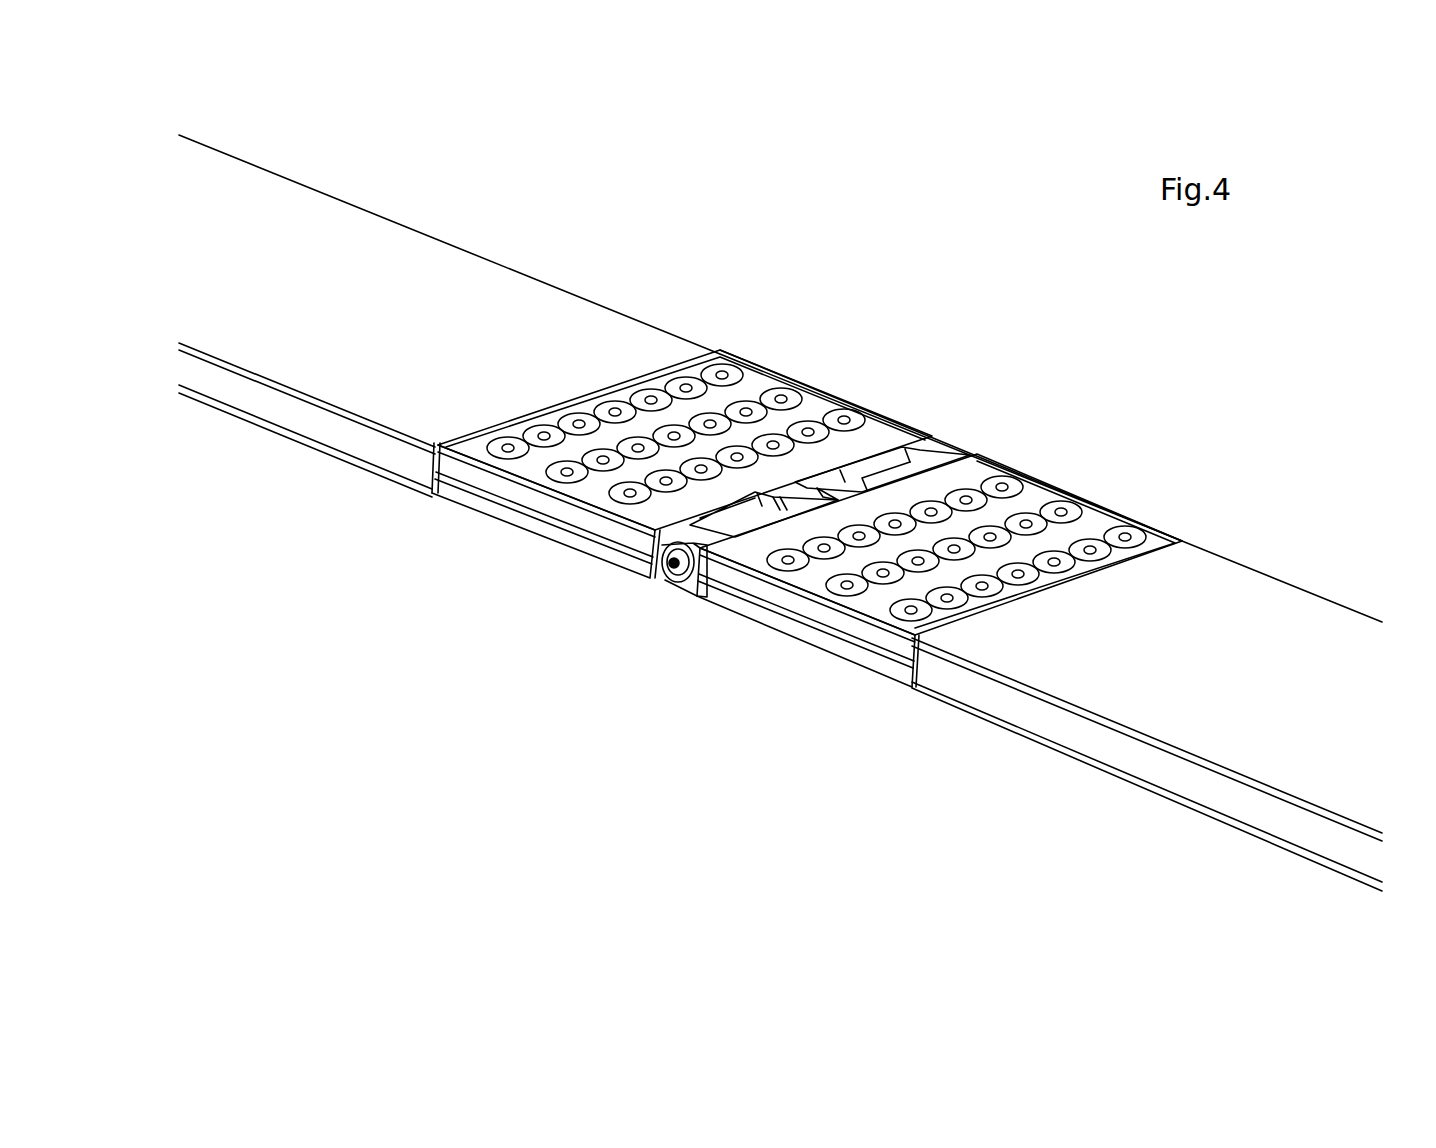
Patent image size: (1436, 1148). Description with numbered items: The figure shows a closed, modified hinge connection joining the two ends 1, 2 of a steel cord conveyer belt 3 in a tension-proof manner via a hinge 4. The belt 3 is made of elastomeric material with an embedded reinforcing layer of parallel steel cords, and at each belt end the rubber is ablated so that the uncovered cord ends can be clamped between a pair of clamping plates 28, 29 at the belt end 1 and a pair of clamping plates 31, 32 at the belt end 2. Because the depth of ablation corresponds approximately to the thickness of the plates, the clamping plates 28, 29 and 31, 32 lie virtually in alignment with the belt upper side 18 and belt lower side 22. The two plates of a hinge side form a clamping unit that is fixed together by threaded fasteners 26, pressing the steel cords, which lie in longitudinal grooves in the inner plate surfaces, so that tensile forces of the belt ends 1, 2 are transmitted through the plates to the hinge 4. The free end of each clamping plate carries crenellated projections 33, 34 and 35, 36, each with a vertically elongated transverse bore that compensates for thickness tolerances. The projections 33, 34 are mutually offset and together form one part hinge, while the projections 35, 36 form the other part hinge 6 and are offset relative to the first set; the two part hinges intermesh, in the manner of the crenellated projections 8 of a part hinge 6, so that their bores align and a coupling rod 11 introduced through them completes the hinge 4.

The belt end 1 is at (389, 452).
The belt end 2 is at (1143, 763).
The steel cord conveyer belt 3 is at (276, 341).
The hinge 4 is at (634, 612).
The part hinge 6 is at (845, 328).
The crenellated projections 8 is at (723, 430).
The coupling rod 11 is at (674, 573).
The belt upper side 18 is at (318, 248).
The belt lower side 22 is at (267, 432).
The threaded fasteners 26 is at (1003, 489).
The clamping plate 28 is at (827, 612).
The clamping plate 29 is at (878, 662).
The clamping plate 31 is at (470, 472).
The clamping plate 32 is at (502, 512).
The crenellated projection 33 is at (735, 522).
The crenellated projection 34 is at (705, 532).
The crenellated projection 35 is at (938, 448).
The crenellated projection 36 is at (907, 470).